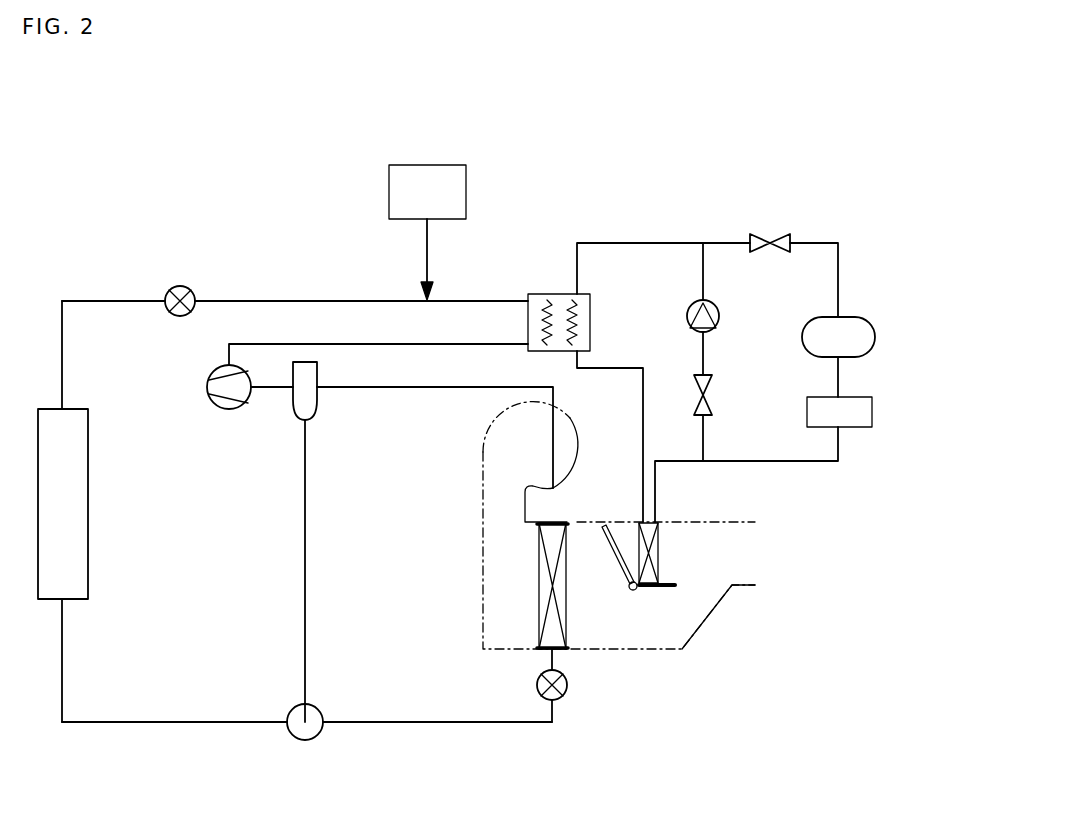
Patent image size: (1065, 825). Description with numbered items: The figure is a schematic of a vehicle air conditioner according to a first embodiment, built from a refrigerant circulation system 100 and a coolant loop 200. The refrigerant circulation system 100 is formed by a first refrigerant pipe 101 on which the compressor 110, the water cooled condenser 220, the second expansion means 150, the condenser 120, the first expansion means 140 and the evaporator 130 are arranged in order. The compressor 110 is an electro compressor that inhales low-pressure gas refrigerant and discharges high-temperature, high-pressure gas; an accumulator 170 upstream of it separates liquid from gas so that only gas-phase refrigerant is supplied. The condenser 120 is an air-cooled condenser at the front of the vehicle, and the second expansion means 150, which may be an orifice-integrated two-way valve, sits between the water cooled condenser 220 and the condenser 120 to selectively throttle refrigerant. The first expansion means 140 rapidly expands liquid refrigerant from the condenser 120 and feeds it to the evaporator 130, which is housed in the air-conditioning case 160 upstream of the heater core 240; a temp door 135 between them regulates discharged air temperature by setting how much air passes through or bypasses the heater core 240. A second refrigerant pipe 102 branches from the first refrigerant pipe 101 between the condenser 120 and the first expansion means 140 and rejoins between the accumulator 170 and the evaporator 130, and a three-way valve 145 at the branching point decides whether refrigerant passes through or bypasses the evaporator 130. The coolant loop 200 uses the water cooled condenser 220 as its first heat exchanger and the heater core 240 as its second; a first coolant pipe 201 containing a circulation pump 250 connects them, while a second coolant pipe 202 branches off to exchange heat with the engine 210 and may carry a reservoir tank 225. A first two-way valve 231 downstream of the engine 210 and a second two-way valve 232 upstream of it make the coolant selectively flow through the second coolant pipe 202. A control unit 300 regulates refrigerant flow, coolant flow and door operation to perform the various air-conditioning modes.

The refrigerant circulation system 100 is at (292, 262).
The first refrigerant pipe 101 is at (212, 723).
The second refrigerant pipe 102 is at (305, 574).
The compressor 110 is at (229, 410).
The condenser 120 is at (88, 506).
The evaporator 130 is at (560, 650).
The temp door 135 is at (620, 548).
The first expansion means 140 is at (567, 691).
The three-way valve 145 is at (306, 741).
The second expansion means 150 is at (190, 285).
The air-conditioning case 160 is at (663, 652).
The accumulator 170 is at (318, 417).
The coolant loop 200 is at (720, 208).
The first coolant pipe 201 is at (602, 242).
The second coolant pipe 202 is at (840, 376).
The engine 210 is at (877, 337).
The water cooled condenser 220 is at (548, 293).
The reservoir tank 225 is at (873, 411).
The first two-way valve 231 is at (777, 234).
The second two-way valve 232 is at (712, 398).
The heater core 240 is at (660, 555).
The circulation pump 250 is at (720, 309).
The controller 300 is at (427, 232).